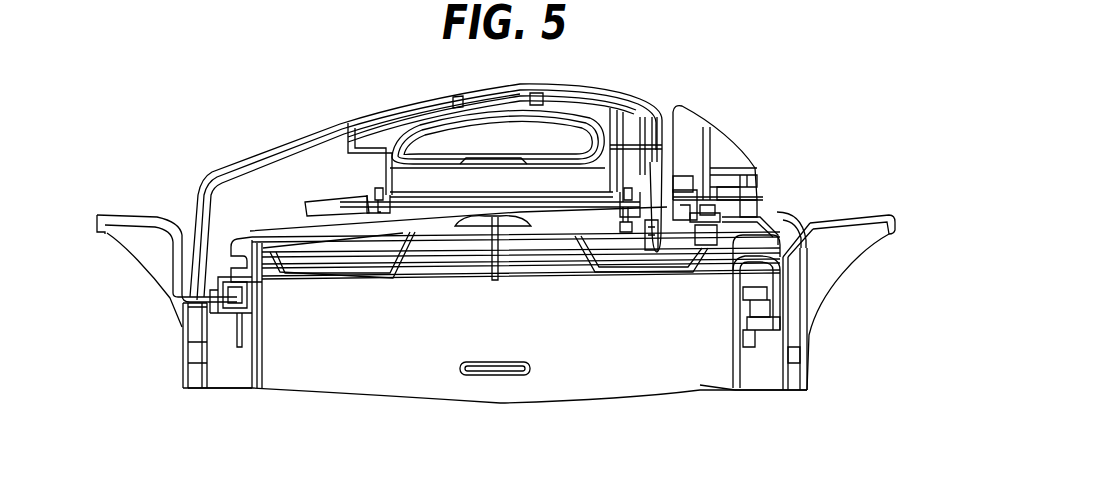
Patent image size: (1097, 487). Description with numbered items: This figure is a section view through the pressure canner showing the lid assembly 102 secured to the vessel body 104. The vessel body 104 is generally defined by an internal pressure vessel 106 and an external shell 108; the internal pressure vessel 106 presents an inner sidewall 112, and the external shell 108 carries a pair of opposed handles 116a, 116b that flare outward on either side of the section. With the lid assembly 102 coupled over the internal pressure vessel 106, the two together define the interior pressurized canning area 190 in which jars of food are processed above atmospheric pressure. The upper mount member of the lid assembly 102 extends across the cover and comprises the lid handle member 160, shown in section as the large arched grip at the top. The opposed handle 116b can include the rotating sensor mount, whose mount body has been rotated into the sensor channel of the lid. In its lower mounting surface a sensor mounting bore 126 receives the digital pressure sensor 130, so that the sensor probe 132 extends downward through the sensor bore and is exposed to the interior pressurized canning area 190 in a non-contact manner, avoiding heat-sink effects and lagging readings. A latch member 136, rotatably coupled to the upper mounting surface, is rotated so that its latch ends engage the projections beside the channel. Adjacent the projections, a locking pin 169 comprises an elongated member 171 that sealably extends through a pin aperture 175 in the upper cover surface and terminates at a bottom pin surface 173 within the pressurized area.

The lid assembly 102 is at (240, 157).
The vessel body 104 is at (183, 366).
The internal pressure vessel 106 is at (254, 360).
The external shell 108 is at (811, 380).
The inner sidewall 112 is at (255, 348).
The opposed handle 116a is at (117, 215).
The opposed handle 116b is at (873, 215).
The sensor mounting bore 126 is at (720, 213).
The digital pressure sensor 130 is at (707, 200).
The sensor probe 132 is at (695, 232).
The latch member 136 is at (687, 107).
The lid handle member 160 is at (418, 98).
The locking pin 169 is at (655, 100).
The elongated member 171 is at (630, 230).
The bottom pin surface 173 is at (643, 230).
The pin aperture 175 is at (622, 232).
The interior pressurized canning area 190 is at (446, 378).